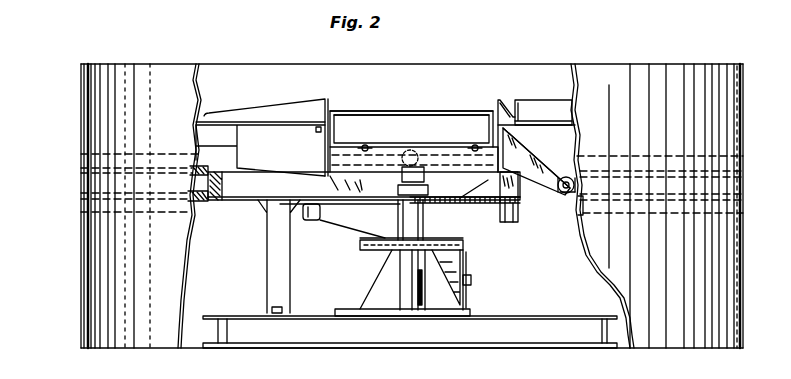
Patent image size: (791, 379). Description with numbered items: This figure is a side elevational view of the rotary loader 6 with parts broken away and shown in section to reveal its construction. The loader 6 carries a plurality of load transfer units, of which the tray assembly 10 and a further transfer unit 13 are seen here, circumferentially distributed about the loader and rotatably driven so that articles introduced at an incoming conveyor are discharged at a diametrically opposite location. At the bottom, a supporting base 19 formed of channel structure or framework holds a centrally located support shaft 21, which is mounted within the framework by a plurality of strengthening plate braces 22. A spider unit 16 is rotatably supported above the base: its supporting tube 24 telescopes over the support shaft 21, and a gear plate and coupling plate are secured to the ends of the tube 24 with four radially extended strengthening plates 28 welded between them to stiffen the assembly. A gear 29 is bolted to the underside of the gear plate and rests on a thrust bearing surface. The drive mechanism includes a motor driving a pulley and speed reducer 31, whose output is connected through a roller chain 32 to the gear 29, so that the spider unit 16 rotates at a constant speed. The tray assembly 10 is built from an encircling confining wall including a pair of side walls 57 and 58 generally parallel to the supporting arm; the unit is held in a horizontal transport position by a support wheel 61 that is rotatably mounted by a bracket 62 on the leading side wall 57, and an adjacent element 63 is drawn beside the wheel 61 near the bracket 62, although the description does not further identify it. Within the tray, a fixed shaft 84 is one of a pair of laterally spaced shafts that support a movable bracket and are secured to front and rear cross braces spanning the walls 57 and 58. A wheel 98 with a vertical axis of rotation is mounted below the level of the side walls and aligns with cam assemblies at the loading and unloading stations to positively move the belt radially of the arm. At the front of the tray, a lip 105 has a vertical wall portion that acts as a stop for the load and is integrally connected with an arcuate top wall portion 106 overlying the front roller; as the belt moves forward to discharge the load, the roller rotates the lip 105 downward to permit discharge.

The rotary loader 6 is at (80, 91).
The transfer unit 10 is at (453, 99).
The transfer unit 13 is at (545, 100).
The spider unit 16 is at (344, 227).
The supporting base 19 is at (563, 288).
The support shaft 21 is at (428, 276).
The strengthening plate braces 22 is at (383, 290).
The supporting tube 24 is at (400, 212).
The strengthening plates 28 is at (498, 219).
The gear 29 is at (388, 251).
The pulley and speed reducer 31 is at (470, 262).
The roller chain 32 is at (356, 244).
The side wall 57 is at (323, 146).
The side wall 58 is at (512, 148).
The support wheel 61 is at (583, 205).
The bracket 62 is at (548, 166).
The pulley 63 is at (577, 175).
The fixed shaft 84 is at (367, 146).
The wheel 98 is at (462, 213).
The front tray lip 105 is at (400, 125).
The arcuate top wall portion 106 is at (362, 111).